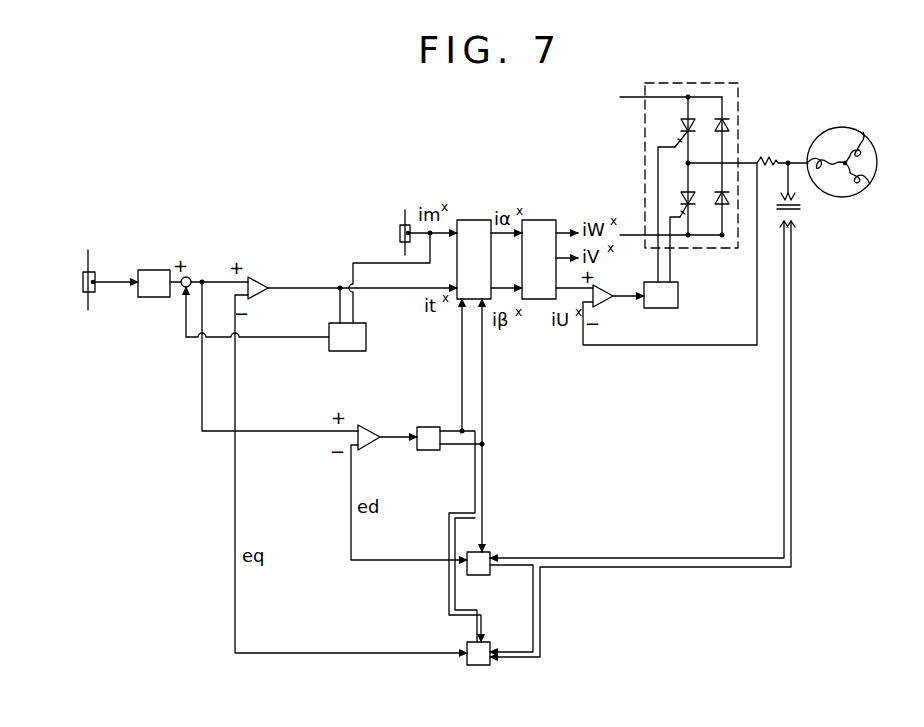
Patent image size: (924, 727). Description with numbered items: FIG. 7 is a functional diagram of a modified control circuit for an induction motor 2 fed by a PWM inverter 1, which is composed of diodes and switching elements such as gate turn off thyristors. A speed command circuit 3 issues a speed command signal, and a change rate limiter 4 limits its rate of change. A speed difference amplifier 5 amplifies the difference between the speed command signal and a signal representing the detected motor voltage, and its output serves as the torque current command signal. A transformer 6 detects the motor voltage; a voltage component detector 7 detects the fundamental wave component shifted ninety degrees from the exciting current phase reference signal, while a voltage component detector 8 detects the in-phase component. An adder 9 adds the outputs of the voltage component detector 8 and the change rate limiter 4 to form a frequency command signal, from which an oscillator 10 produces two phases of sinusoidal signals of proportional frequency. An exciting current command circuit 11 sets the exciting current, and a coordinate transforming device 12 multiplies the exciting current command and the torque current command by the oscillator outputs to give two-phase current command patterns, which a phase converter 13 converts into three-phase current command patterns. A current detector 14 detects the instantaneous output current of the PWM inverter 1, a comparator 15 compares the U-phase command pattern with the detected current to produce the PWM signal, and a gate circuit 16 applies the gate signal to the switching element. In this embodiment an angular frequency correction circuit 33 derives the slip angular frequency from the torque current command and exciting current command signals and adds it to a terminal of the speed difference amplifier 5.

The PWM inverter 1 is at (740, 100).
The induction motor 2 is at (877, 162).
The speed command circuit 3 is at (83, 282).
The change rate limiter 4 is at (153, 270).
The speed difference amplifier 5 is at (256, 277).
The transformer 6 is at (800, 211).
The voltage component detector 7 is at (482, 665).
The voltage component detector 8 is at (490, 552).
The adder 9 is at (370, 425).
The oscillator 10 is at (429, 427).
The exciting current command circuit 11 is at (400, 232).
The coordinate transforming device 12 is at (468, 220).
The phase converter 13 is at (535, 220).
The current detector 14 is at (766, 157).
The comparator 15 is at (606, 308).
The gate circuit 16 is at (678, 296).
The angular frequency correction circuit 33 is at (366, 339).